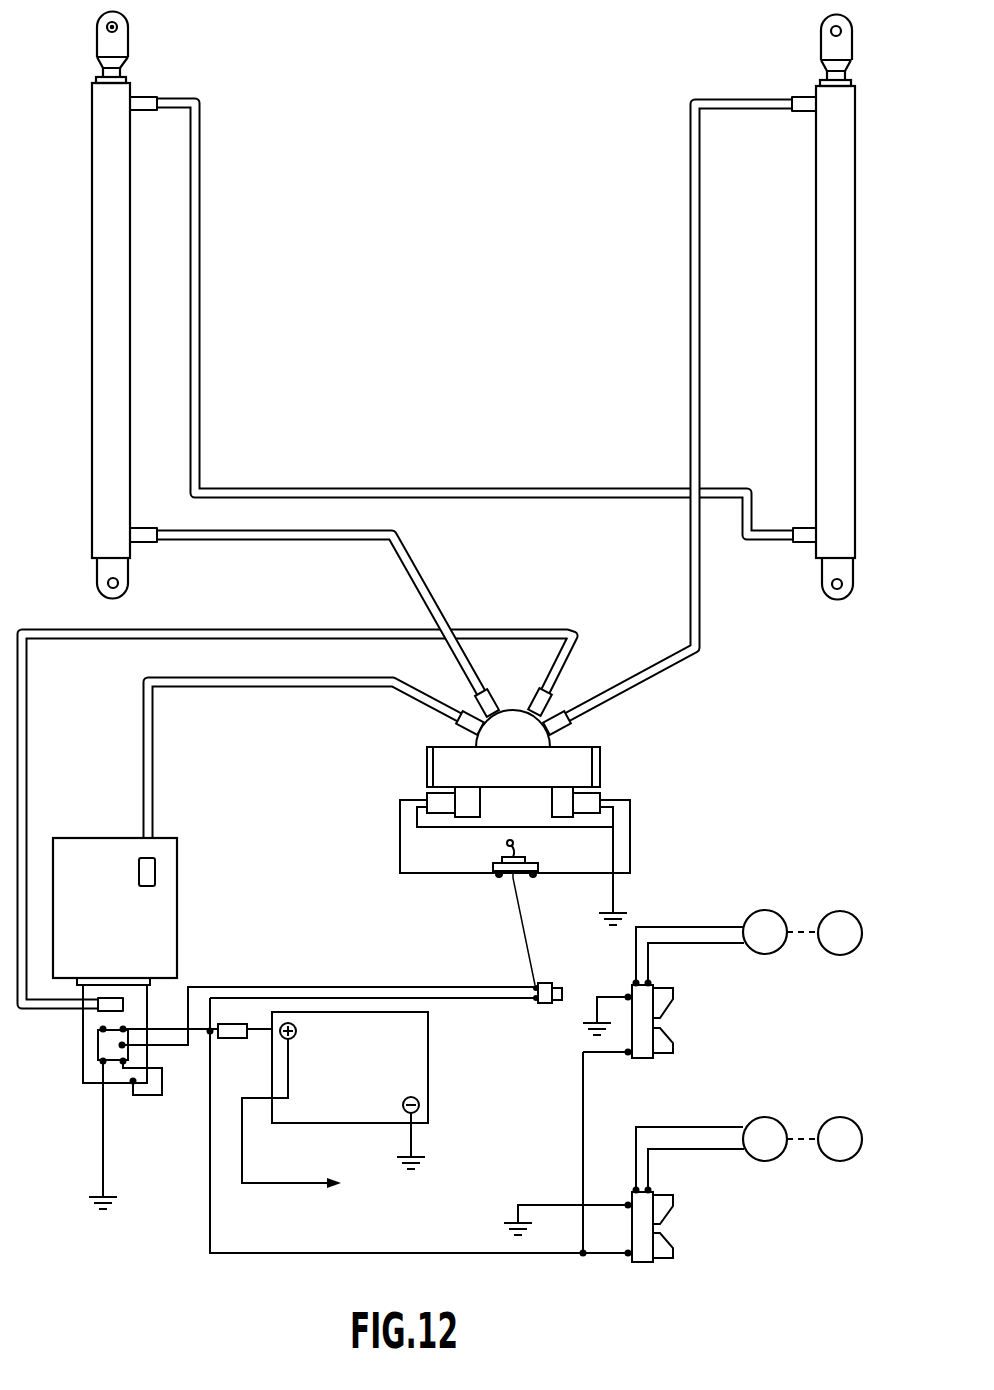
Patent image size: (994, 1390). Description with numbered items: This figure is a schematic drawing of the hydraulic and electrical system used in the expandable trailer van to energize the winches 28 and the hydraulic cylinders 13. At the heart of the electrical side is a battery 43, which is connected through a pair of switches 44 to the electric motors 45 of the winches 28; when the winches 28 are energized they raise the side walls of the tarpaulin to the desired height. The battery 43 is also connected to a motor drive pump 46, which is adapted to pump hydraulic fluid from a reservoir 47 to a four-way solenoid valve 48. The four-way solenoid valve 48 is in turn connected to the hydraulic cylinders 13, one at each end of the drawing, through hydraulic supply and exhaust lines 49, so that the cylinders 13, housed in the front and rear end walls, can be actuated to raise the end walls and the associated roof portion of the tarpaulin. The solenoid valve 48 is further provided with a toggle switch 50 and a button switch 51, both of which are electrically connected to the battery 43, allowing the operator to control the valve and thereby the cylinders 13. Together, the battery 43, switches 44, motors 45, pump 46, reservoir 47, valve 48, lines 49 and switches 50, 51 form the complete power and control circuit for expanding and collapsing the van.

The hydraulic cylinder 13 is at (88, 343).
The winch 28 is at (845, 912).
The battery 43 is at (428, 1042).
The switch 44 is at (632, 988).
The electric motor 45 is at (776, 897).
The motor drive pump 46 is at (139, 1013).
The reservoir 47 is at (180, 860).
The four-way solenoid valve 48 is at (580, 747).
The hydraulic supply and exhaust line 49 is at (406, 560).
The toggle switch 50 is at (518, 851).
The button switch 51 is at (550, 983).